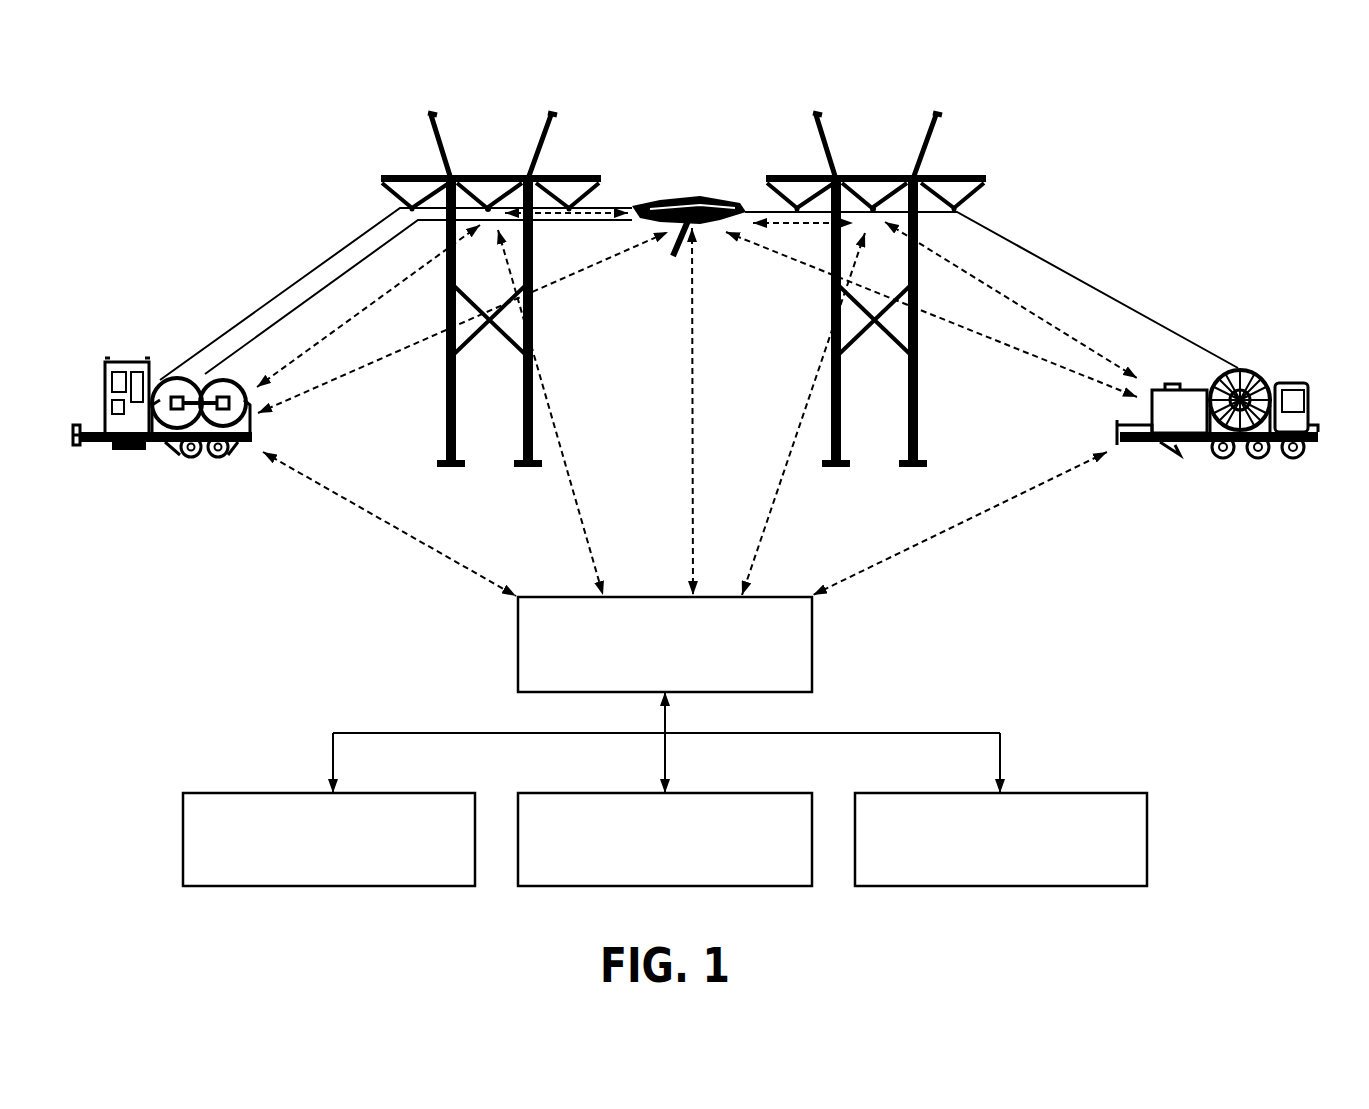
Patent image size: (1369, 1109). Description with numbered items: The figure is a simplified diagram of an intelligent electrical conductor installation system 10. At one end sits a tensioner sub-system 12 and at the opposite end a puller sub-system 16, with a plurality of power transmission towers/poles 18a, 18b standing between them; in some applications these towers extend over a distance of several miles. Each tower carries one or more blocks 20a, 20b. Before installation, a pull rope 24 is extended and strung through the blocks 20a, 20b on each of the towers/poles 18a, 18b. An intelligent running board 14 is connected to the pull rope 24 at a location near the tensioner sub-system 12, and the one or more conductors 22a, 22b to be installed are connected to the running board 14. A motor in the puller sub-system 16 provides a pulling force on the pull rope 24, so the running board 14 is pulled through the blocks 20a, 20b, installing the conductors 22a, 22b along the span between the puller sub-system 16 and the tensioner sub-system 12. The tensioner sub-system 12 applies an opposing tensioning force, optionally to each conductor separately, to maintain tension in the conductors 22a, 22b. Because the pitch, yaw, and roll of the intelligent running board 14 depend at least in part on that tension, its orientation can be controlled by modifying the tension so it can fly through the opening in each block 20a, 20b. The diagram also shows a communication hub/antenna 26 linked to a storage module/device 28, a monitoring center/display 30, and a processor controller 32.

The intelligent electrical conductor installation system 10 is at (188, 147).
The tensioner sub-system 12 is at (93, 376).
The intelligent running board 14 is at (672, 199).
The puller sub-system 16 is at (1319, 387).
The power transmission tower/pole 18a is at (407, 172).
The power transmission tower/pole 18b is at (963, 170).
The block 20a is at (488, 206).
The block 20b is at (876, 207).
The conductor 22a is at (243, 322).
The conductor 22b is at (312, 299).
The pull rope 24 is at (1137, 312).
The communication hub/antenna 26 is at (813, 670).
The storage module/device 28 is at (385, 793).
The monitoring center/display 30 is at (720, 793).
The processor controller 32 is at (1057, 793).